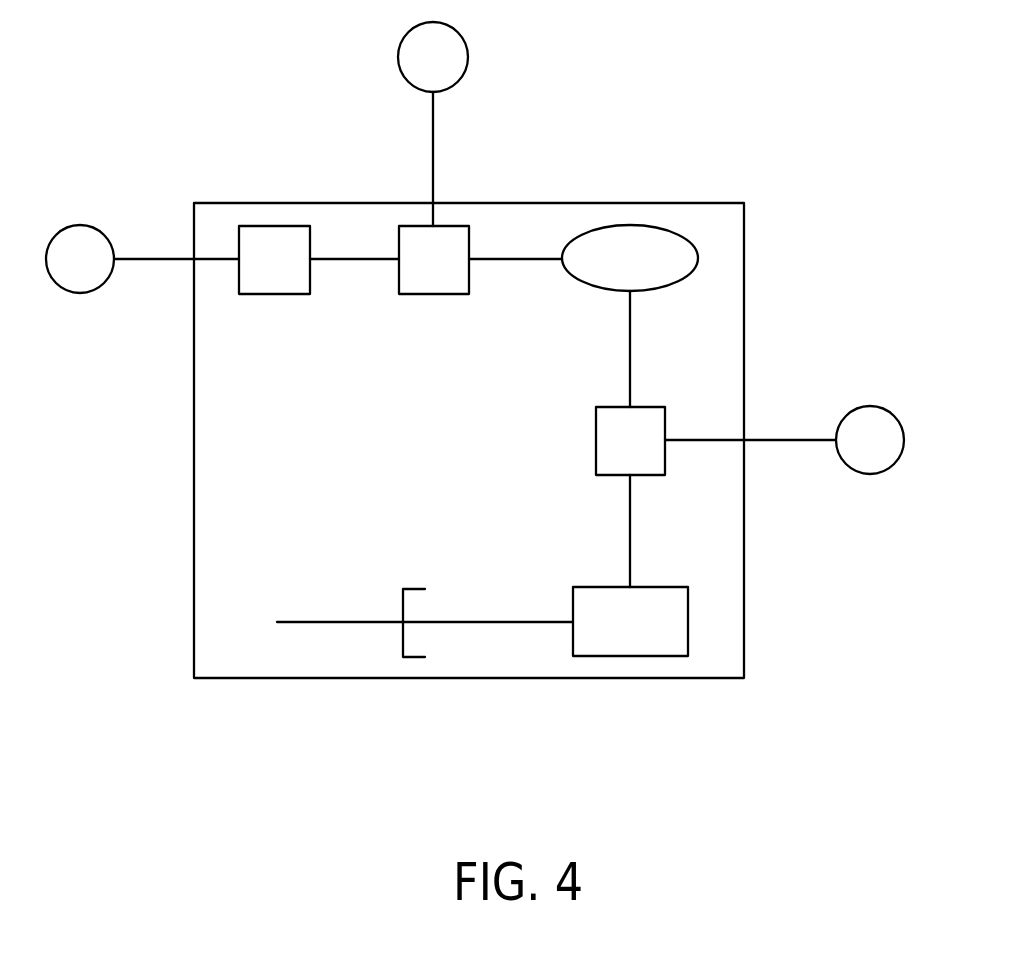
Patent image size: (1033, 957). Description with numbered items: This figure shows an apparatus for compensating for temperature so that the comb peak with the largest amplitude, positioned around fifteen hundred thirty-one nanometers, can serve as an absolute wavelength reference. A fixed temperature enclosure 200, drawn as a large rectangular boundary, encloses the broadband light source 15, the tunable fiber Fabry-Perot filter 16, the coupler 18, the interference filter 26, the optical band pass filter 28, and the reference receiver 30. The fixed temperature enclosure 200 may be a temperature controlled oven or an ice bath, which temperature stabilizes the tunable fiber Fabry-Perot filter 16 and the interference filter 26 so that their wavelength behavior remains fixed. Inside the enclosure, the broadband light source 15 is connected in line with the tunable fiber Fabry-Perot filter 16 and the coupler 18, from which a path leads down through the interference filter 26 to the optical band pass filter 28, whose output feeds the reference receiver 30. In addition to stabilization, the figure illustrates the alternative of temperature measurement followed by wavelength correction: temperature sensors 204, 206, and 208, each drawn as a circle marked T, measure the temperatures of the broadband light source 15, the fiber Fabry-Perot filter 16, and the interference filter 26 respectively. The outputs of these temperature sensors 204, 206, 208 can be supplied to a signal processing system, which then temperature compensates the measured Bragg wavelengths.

The broadband light source 15 is at (273, 227).
The tunable fiber Fabry-Perot filter 16 is at (435, 294).
The coupler 18 is at (628, 227).
The interference filter 26 is at (596, 440).
The optical band pass filter 28 is at (633, 656).
The reference receiver 30 is at (413, 588).
The fixed temperature enclosure 200 is at (745, 243).
The temperature sensor 204 is at (80, 295).
The temperature sensor 206 is at (468, 52).
The temperature sensor 208 is at (873, 406).